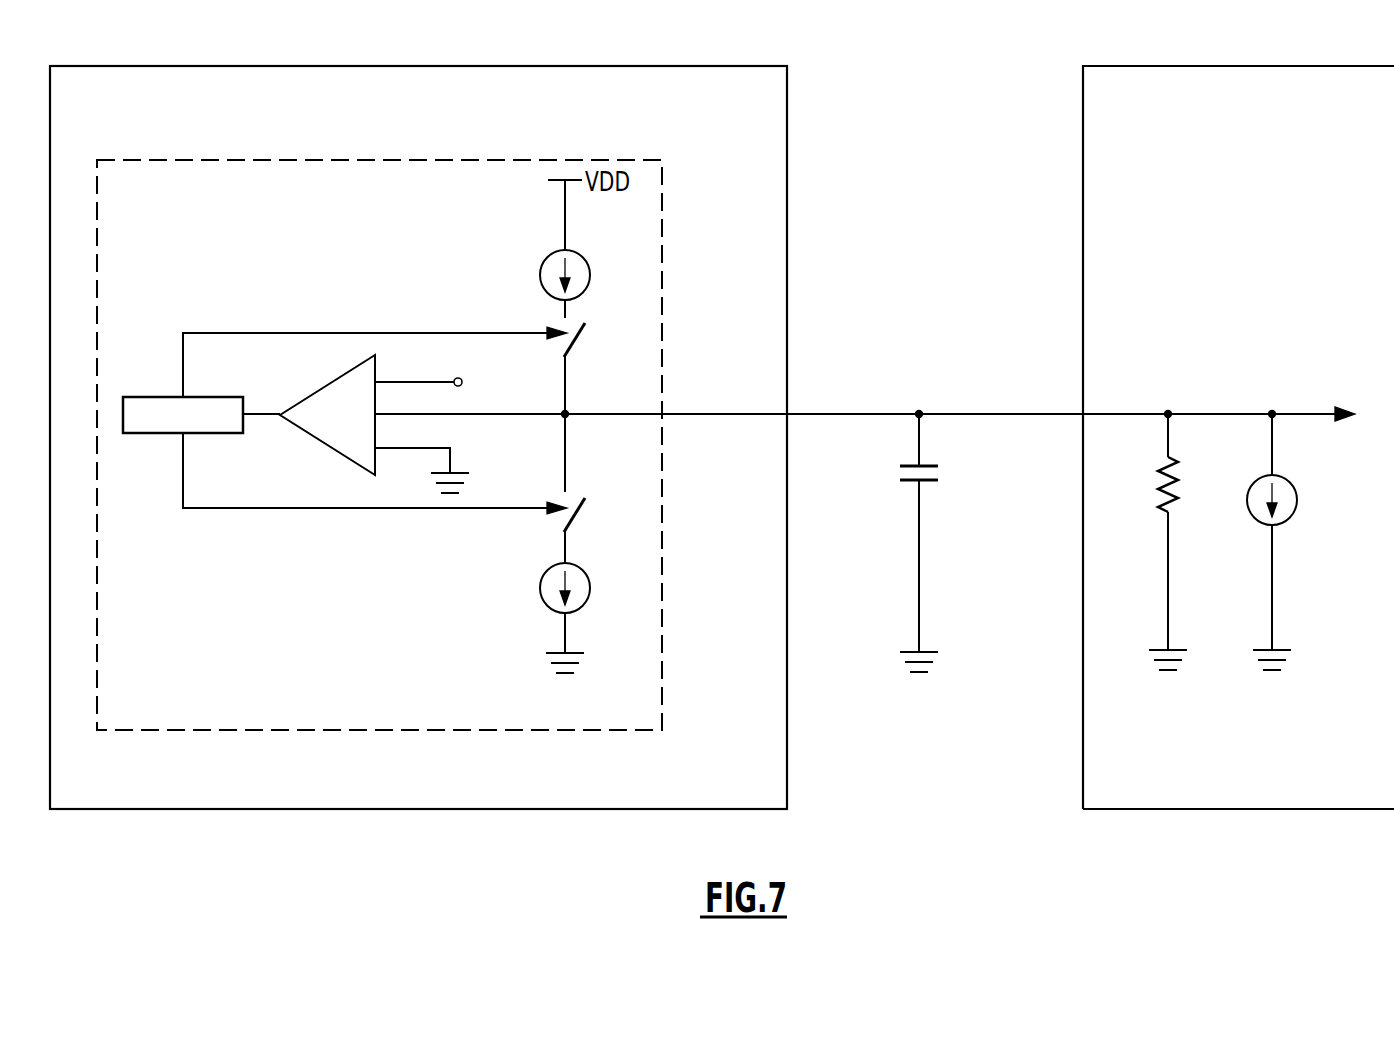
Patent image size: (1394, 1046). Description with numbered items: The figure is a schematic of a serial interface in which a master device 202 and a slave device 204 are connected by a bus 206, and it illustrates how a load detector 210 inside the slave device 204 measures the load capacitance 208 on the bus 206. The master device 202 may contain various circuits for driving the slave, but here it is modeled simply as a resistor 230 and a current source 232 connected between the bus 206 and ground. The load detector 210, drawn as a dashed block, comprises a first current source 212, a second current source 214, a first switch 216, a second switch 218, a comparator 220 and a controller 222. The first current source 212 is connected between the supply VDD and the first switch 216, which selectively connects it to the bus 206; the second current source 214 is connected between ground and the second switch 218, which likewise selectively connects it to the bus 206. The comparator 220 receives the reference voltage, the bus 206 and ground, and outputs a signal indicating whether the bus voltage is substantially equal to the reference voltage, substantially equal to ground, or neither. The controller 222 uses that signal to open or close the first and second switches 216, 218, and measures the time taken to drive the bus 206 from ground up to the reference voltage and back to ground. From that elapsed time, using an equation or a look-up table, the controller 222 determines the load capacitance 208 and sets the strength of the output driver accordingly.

The master device 202 is at (1295, 66).
The slave device 204 is at (645, 66).
The bus 206 is at (958, 414).
The load capacitance 208 is at (931, 484).
The load detector 210 is at (345, 160).
The first current source 212 is at (547, 262).
The second current source 214 is at (547, 574).
The first switch 216 is at (577, 334).
The second switch 218 is at (577, 509).
The comparator 220 is at (325, 385).
The controller 222 is at (156, 397).
The resistor 230 is at (1175, 462).
The current source 232 is at (1290, 483).